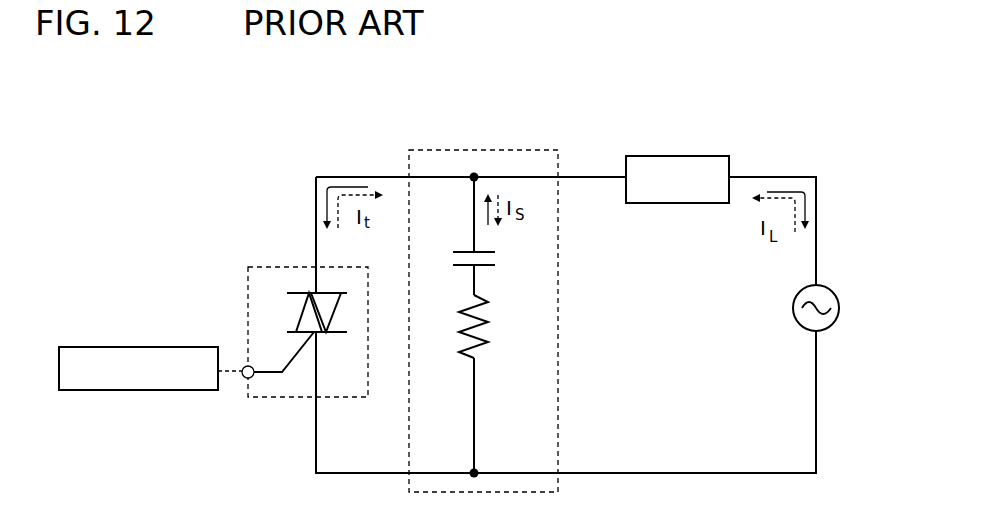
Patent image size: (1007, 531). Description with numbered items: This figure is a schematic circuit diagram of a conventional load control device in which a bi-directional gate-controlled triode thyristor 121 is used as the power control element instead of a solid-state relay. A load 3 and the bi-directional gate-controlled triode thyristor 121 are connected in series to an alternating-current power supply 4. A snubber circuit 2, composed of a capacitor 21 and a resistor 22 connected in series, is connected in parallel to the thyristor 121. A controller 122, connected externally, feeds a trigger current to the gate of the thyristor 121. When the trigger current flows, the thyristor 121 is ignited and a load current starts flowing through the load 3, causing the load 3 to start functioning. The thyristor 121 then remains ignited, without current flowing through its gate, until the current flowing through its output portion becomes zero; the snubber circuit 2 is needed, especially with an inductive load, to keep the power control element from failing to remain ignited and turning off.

The snubber circuit 2 is at (507, 150).
The capacitor 21 is at (500, 260).
The resistor 22 is at (492, 330).
The load 3 is at (703, 157).
The alternating-current power supply 4 is at (793, 308).
The bi-directional gate-controlled triode thyristor 121 is at (308, 293).
The controller 122 is at (180, 347).